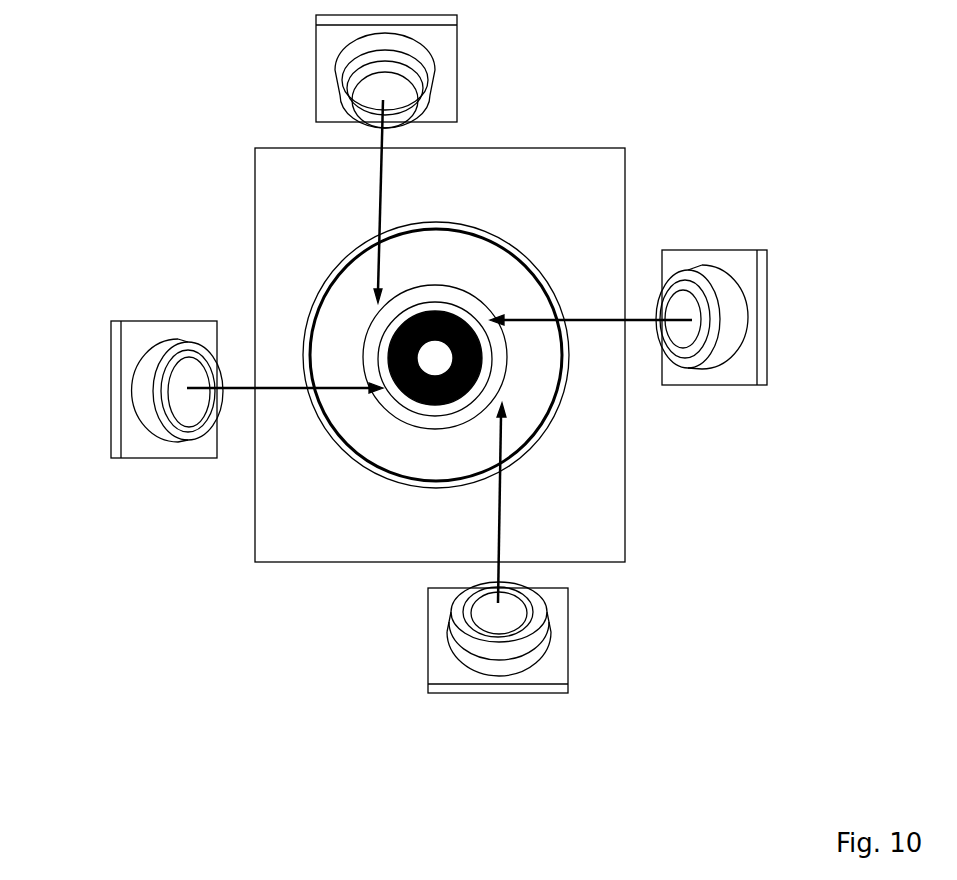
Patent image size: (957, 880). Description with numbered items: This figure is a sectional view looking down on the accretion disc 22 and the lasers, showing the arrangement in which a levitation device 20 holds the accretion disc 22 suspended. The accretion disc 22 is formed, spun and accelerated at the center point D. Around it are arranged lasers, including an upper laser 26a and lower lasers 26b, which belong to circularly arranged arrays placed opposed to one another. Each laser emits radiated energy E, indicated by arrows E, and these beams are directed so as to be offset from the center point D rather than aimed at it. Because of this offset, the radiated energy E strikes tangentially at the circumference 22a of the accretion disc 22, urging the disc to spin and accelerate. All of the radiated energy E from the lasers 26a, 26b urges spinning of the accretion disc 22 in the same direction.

The levitation device 20 is at (549, 135).
The accretion disc 22 is at (457, 315).
The circumference 22a is at (418, 313).
The upper laser 26a is at (110, 405).
The lower laser 26b is at (462, 36).
The center point D is at (430, 358).
The radiated energy E is at (439, 351).